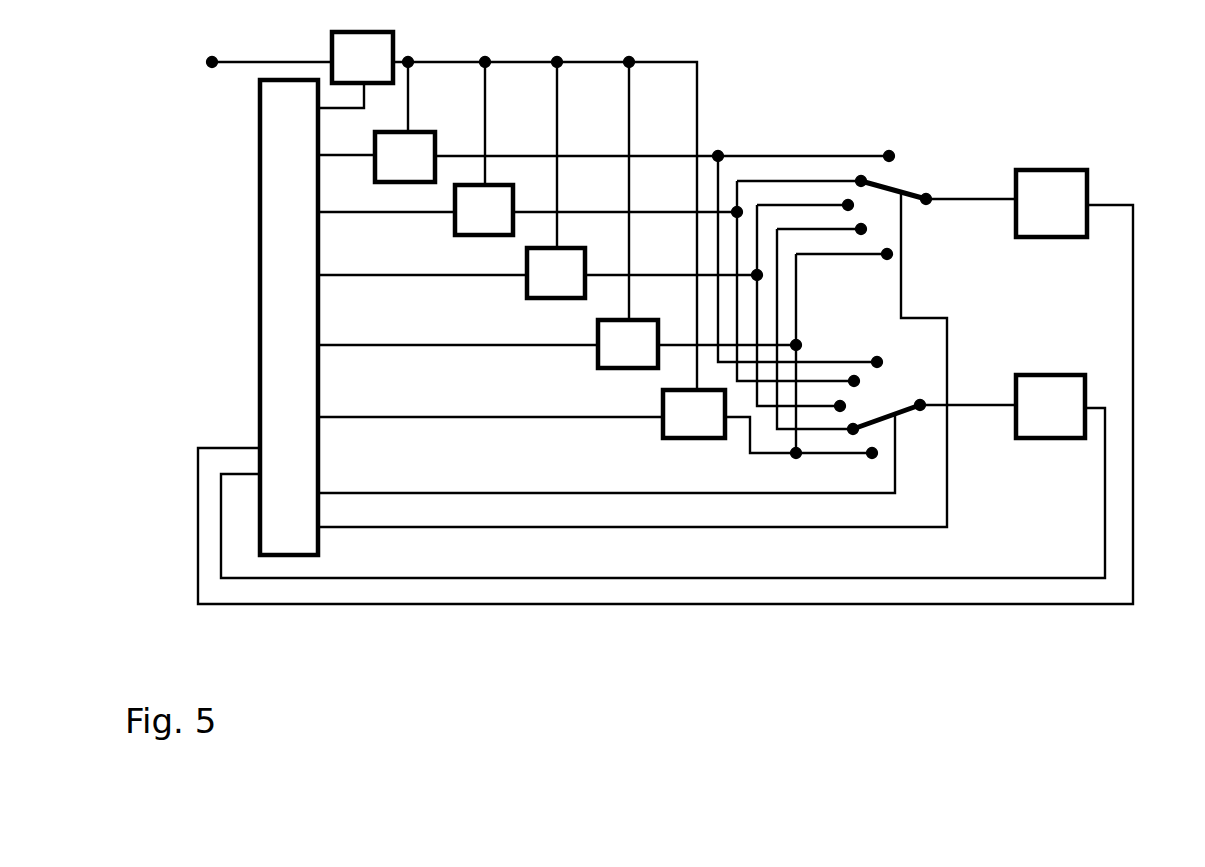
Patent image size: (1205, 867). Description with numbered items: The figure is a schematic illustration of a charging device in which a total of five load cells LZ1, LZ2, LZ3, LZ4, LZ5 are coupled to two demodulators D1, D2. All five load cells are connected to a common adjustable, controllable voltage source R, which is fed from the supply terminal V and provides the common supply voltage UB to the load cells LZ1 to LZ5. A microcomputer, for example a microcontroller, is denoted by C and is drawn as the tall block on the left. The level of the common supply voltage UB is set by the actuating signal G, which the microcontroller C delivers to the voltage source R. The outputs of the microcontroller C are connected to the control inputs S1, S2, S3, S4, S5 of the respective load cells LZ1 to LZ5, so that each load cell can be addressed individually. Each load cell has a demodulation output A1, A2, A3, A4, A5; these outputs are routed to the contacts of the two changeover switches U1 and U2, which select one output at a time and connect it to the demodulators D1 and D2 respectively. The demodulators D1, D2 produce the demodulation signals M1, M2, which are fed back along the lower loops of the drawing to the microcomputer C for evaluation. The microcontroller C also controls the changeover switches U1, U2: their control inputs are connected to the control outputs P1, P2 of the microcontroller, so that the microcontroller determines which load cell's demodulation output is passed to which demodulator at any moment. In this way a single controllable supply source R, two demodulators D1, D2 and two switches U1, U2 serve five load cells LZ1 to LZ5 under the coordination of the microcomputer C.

The supply voltage terminal V is at (257, 63).
The supply voltage UB is at (545, 210).
The controllable voltage source R is at (362, 72).
The actuating signal G is at (341, 110).
The microcomputer C is at (301, 326).
The control input S1 is at (346, 168).
The control input S2 is at (386, 225).
The control input S3 is at (422, 290).
The control input S4 is at (458, 359).
The control input S5 is at (490, 431).
The load cell LZ1 is at (405, 170).
The load cell LZ2 is at (484, 223).
The load cell LZ3 is at (556, 286).
The load cell LZ4 is at (628, 357).
The load cell LZ5 is at (694, 427).
The demodulation output A1 is at (665, 249).
The demodulation output A2 is at (687, 284).
The demodulation output A3 is at (719, 306).
The demodulation output A4 is at (775, 339).
The demodulation output A5 is at (801, 426).
The changeover switch U1 is at (936, 207).
The changeover switch U2 is at (932, 423).
The demodulator D1 is at (1051, 216).
The demodulator D2 is at (1050, 421).
The demodulation signal M1 is at (665, 404).
The demodulation signal M2 is at (660, 493).
The control output P1 is at (632, 359).
The control output P2 is at (606, 453).